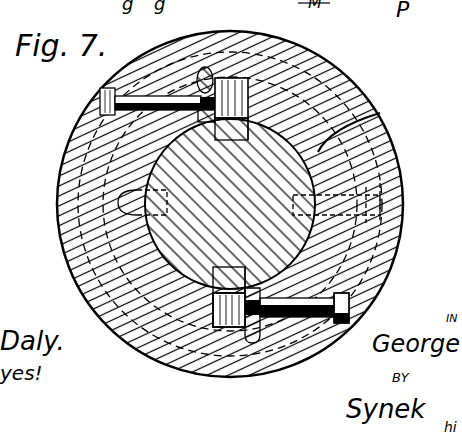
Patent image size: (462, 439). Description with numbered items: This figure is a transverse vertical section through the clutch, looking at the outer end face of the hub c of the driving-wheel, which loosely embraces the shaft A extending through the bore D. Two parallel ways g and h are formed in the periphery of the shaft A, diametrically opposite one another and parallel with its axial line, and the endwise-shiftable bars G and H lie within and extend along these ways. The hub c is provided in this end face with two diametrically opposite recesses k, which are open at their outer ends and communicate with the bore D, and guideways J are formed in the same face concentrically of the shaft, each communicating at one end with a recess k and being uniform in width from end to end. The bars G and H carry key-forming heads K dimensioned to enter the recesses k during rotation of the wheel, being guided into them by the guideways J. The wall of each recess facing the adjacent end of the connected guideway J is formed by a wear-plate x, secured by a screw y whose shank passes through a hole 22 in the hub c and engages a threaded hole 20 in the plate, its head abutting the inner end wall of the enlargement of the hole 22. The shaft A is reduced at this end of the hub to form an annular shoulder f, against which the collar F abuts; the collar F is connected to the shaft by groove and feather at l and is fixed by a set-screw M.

The collar F is at (318, 80).
The shaft A is at (187, 180).
The bore D is at (175, 178).
The hub c is at (347, 95).
The annular shoulder f is at (378, 114).
The groove and feather l is at (122, 200).
The guideways J is at (350, 157).
The set-screw M is at (396, 181).
The hole 22 is at (118, 126).
The threaded hole 20 is at (320, 364).
The wear-plate x is at (203, 68).
The recesses k is at (215, 78).
The key-forming heads K is at (237, 330).
The screw y is at (362, 305).
The way g is at (216, 142).
The endwise-shiftable bar G is at (237, 140).
The way h is at (214, 266).
The endwise-shiftable bar H is at (234, 267).